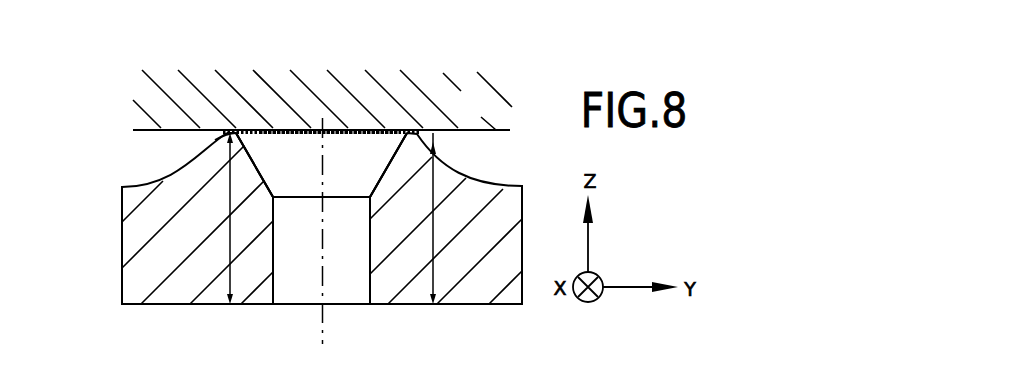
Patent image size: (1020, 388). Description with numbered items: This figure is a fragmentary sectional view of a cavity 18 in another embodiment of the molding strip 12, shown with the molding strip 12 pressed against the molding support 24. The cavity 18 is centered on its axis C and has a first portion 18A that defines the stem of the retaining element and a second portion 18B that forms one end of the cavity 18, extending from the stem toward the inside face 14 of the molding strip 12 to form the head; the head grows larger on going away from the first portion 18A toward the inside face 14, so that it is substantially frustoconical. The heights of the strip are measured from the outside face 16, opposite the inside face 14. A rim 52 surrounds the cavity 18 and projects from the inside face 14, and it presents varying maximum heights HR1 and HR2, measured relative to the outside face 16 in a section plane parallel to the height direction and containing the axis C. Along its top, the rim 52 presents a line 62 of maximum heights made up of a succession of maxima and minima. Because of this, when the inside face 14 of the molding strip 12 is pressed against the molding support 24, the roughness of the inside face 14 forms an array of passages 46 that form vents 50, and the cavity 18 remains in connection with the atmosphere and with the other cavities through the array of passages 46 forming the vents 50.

The molding strip 12 is at (131, 236).
The inside face 14 is at (509, 179).
The outside face 16 is at (479, 311).
The cavity 18 is at (346, 280).
The first portion 18A is at (287, 290).
The second portion 18B is at (353, 176).
The molding support 24 is at (431, 84).
The array of passages 46 is at (350, 122).
The vents 50 is at (253, 130).
The rim 52 is at (224, 137).
The line of maximum heights 62 is at (290, 130).
The rim height HR1 is at (454, 218).
The rim height HR2 is at (206, 218).
The axis C is at (323, 246).